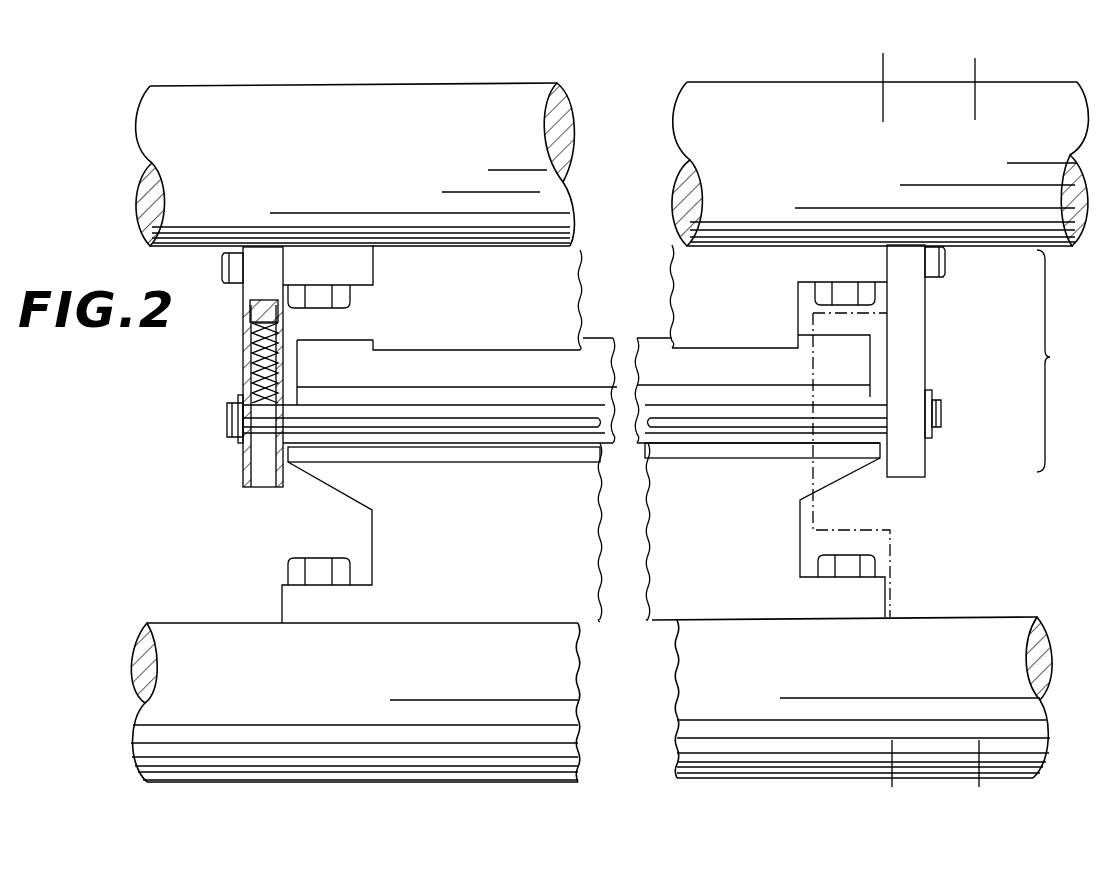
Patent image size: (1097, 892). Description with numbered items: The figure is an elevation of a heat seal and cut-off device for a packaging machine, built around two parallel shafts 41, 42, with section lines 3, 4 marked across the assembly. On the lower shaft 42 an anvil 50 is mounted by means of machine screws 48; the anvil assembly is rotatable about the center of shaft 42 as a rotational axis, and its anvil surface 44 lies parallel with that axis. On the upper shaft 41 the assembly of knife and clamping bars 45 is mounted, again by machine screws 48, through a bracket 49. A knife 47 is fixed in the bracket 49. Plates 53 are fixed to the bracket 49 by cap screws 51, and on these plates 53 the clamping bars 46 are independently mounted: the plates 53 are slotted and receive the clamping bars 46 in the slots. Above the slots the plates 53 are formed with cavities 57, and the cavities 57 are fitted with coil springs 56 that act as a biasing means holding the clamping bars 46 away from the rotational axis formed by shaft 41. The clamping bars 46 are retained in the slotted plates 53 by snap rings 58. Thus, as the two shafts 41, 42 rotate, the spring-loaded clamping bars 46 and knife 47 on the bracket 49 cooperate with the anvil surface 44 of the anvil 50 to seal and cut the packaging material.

The section line 3- 3 is at (822, 46).
The section line 4- 4 is at (921, 46).
The shaft 41 is at (331, 174).
The shaft 42 is at (334, 704).
The anvil surface 44 is at (325, 442).
The assembly of knife and clamping bars 45 is at (1060, 361).
The clamping bars 46 is at (226, 418).
The knife 47 is at (316, 352).
The machine screws 48 is at (322, 296).
The bracket 49 is at (680, 260).
The anvil 50 is at (384, 531).
The cap screws 51 is at (222, 268).
The plates 53 is at (252, 308).
The coil springs 56 is at (250, 372).
The cavities 57 is at (253, 336).
The snap rings 58 is at (243, 441).